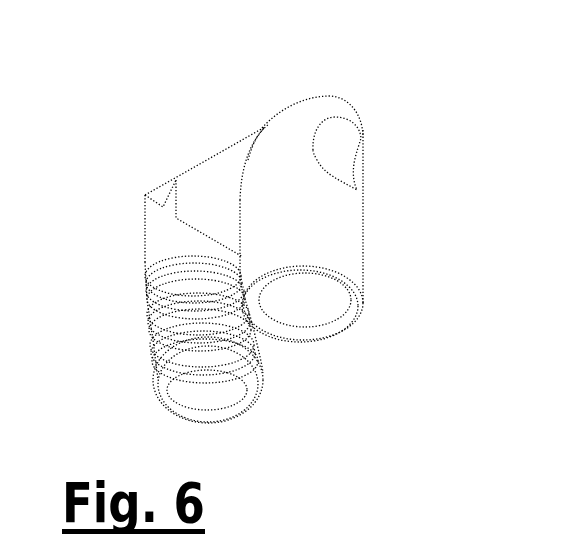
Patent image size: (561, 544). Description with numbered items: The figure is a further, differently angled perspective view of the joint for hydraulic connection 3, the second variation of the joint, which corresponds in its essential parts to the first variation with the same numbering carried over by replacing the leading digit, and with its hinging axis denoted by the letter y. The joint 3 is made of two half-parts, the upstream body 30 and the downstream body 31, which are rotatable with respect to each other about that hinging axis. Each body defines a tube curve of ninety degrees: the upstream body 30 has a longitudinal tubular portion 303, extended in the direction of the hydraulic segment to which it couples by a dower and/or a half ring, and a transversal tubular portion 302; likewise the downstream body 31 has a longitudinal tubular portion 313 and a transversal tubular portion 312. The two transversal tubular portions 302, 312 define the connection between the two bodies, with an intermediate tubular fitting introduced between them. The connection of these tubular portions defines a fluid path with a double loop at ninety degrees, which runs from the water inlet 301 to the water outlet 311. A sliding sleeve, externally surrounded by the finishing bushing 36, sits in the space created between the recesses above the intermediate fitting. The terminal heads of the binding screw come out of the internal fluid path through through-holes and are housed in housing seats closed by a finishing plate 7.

The joint for hydraulic connection 3 is at (292, 73).
The finishing plate 7 is at (342, 148).
The upstream body 30 is at (153, 220).
The downstream body 31 is at (333, 190).
The finishing bushing 36 is at (218, 182).
The water inlet 301 is at (180, 380).
The transversal tubular portion of the upstream body 302 is at (185, 203).
The longitudinal tubular portion of the upstream body 303 is at (180, 240).
The water outlet 311 is at (293, 302).
The transversal tubular portion of the downstream body 312 is at (267, 132).
The longitudinal tubular portion of the downstream body 313 is at (297, 223).